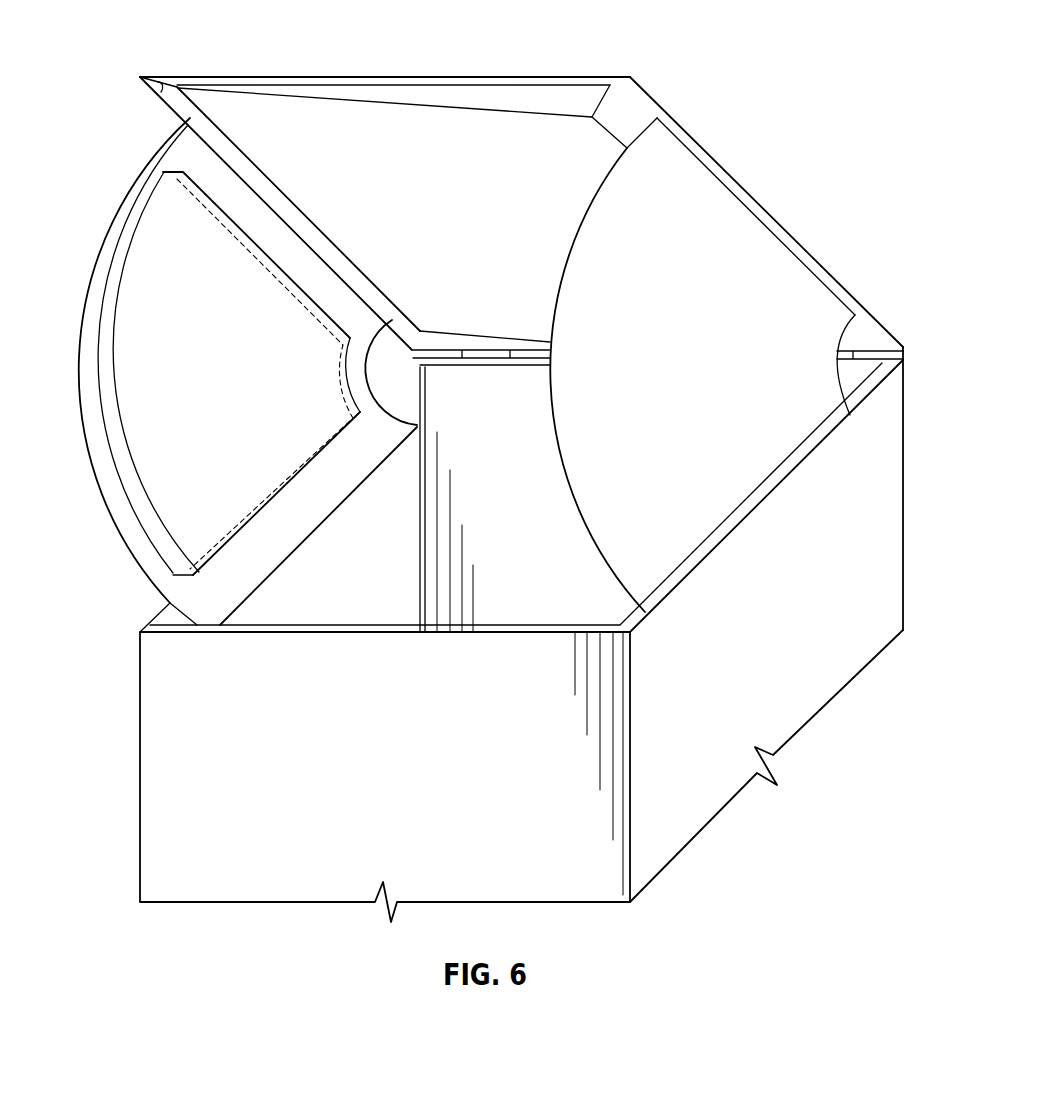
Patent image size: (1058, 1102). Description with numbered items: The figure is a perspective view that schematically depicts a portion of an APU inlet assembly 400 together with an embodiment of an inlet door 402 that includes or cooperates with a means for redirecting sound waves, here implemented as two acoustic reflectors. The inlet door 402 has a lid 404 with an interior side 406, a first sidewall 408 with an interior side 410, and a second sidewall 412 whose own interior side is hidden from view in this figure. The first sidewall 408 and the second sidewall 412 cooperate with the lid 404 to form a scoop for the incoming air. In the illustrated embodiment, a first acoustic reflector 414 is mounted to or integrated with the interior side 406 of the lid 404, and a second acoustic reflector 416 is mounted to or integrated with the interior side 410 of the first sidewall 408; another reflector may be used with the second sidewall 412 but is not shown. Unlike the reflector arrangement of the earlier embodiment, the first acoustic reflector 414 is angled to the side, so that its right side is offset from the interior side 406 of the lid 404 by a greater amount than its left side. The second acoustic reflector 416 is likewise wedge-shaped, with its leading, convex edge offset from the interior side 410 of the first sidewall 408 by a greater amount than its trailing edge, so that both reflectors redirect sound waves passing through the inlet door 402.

The APU inlet assembly 400 is at (853, 705).
The inlet door 402 is at (769, 197).
The lid 404 is at (405, 77).
The interior side of the lid 406 is at (158, 89).
The first sidewall 408 is at (288, 555).
The interior side of the first sidewall 410 is at (331, 478).
The second sidewall 412 is at (590, 512).
The first acoustic reflector 414 is at (562, 84).
The second acoustic reflector 416 is at (108, 480).